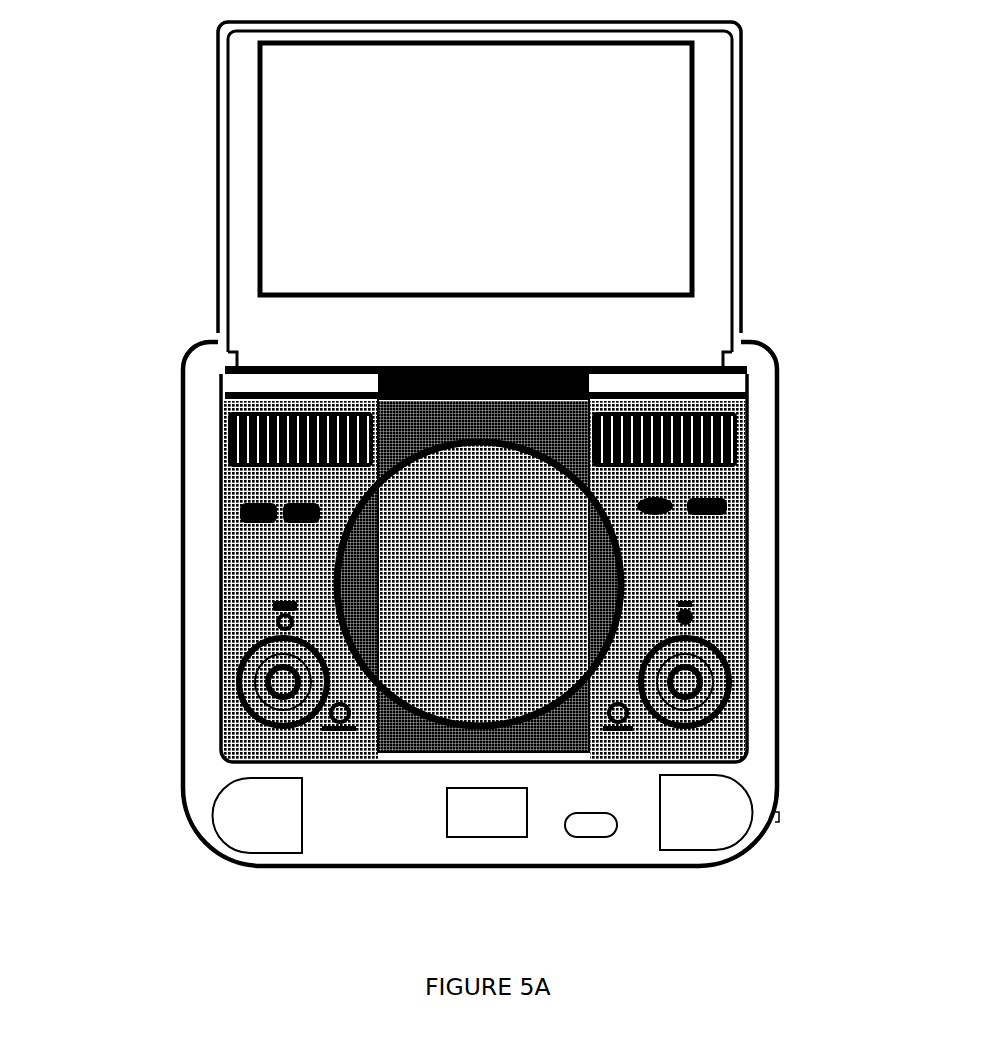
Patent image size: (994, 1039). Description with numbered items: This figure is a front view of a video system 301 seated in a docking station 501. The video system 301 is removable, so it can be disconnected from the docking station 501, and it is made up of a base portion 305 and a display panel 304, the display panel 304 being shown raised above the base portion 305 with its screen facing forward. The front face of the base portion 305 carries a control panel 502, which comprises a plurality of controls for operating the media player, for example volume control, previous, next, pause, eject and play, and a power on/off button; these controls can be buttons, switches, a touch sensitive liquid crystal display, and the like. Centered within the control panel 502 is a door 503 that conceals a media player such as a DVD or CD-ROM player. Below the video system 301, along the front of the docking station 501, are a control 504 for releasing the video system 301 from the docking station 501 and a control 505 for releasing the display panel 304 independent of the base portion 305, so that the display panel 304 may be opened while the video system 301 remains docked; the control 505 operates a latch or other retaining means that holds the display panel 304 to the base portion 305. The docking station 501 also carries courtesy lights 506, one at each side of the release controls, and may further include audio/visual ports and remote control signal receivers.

The video system 301 is at (130, 197).
The display panel 304 is at (739, 192).
The base portion 305 is at (748, 443).
The docking station 501 is at (778, 524).
The control panel 502 is at (231, 636).
The door 503 is at (345, 578).
The control for releasing the video system 504 is at (597, 838).
The control for releasing the display panel 505 is at (491, 839).
The courtesy lights 506 is at (245, 854).